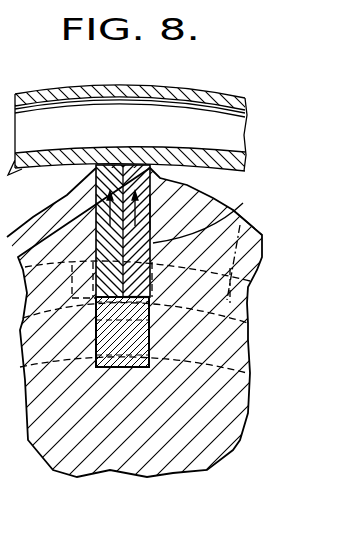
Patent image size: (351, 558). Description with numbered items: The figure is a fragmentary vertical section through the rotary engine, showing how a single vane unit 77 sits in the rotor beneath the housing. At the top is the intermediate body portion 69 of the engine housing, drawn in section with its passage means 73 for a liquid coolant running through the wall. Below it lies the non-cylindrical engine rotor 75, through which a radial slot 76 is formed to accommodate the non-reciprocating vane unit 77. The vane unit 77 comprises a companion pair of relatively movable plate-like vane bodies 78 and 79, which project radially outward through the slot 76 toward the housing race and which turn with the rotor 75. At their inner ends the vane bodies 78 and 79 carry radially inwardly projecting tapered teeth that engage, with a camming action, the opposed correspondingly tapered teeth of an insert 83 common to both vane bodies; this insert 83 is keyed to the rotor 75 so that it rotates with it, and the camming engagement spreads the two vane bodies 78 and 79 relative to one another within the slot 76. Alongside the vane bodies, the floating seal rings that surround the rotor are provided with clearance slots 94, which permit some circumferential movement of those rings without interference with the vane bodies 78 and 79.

The intermediate body portion 69 is at (142, 92).
The passage means 73 is at (213, 117).
The engine rotor 75 is at (110, 432).
The radial slots 76 is at (210, 217).
The vane unit 77 is at (104, 194).
The vane body 78 is at (100, 225).
The vane body 79 is at (146, 211).
The insert 83 is at (131, 342).
The clearance slots 94 is at (244, 216).